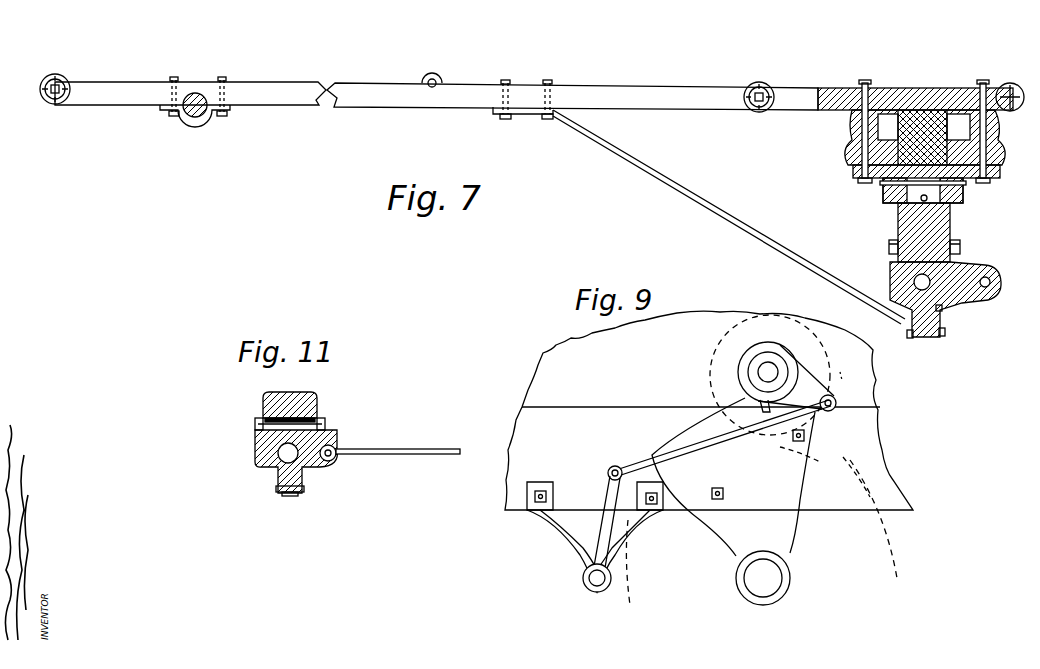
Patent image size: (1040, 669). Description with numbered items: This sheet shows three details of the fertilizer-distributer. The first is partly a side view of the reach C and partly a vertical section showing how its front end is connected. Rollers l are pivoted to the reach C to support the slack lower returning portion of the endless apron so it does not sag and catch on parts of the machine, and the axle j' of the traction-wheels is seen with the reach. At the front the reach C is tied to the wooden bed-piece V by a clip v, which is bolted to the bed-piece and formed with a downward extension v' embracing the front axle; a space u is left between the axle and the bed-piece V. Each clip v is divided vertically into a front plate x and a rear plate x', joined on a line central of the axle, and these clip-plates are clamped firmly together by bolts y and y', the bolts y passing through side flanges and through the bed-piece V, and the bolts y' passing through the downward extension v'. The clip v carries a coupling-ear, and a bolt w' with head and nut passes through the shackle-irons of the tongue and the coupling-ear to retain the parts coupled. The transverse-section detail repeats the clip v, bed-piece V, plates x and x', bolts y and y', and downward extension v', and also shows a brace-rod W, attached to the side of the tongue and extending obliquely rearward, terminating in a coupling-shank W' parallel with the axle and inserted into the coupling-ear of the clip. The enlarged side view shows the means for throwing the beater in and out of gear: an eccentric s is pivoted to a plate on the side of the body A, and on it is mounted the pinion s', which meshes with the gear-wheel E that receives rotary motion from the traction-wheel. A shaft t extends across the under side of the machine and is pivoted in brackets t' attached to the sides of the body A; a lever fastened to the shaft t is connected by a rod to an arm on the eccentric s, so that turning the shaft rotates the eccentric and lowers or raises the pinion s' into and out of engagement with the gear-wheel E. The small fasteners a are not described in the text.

In FIG. 7, the reach C is at (380, 100).
In FIG. 7, the rollers l is at (55, 104).
In FIG. 7, the axle j' is at (195, 112).
In FIG. 9, the axle j' is at (758, 579).
In FIG. 7, the brace rod z is at (724, 214).
In FIG. 7, the bed-piece V is at (950, 215).
In FIG. 11, the bed-piece V is at (266, 392).
In FIG. 7, the bolts y is at (912, 250).
In FIG. 11, the bolts y is at (304, 419).
In FIG. 7, the space u is at (889, 279).
In FIG. 11, the space u is at (272, 468).
In FIG. 7, the rear plate x' is at (883, 294).
In FIG. 11, the rear plate x' is at (232, 468).
In FIG. 7, the front plate x is at (951, 310).
In FIG. 11, the front plate x is at (317, 491).
In FIG. 7, the clips v is at (1001, 234).
In FIG. 11, the clips v is at (329, 407).
In FIG. 7, the bolt w' is at (1007, 266).
In FIG. 7, the brackets t' is at (965, 328).
In FIG. 9, the brackets t' is at (595, 537).
In FIG. 7, the downward extensions v' is at (919, 350).
In FIG. 11, the downward extensions v' is at (290, 503).
In FIG. 11, the bolts y' is at (308, 496).
In FIG. 11, the coupling-shanks W' is at (351, 444).
In FIG. 11, the brace-rods W is at (398, 442).
In FIG. 9, the body A is at (709, 410).
In FIG. 9, the fastener a is at (669, 462).
In FIG. 9, the eccentrics s is at (774, 372).
In FIG. 9, the pinions s' is at (847, 372).
In FIG. 9, the shaft t is at (582, 604).
In FIG. 9, the gear-wheel E is at (892, 546).